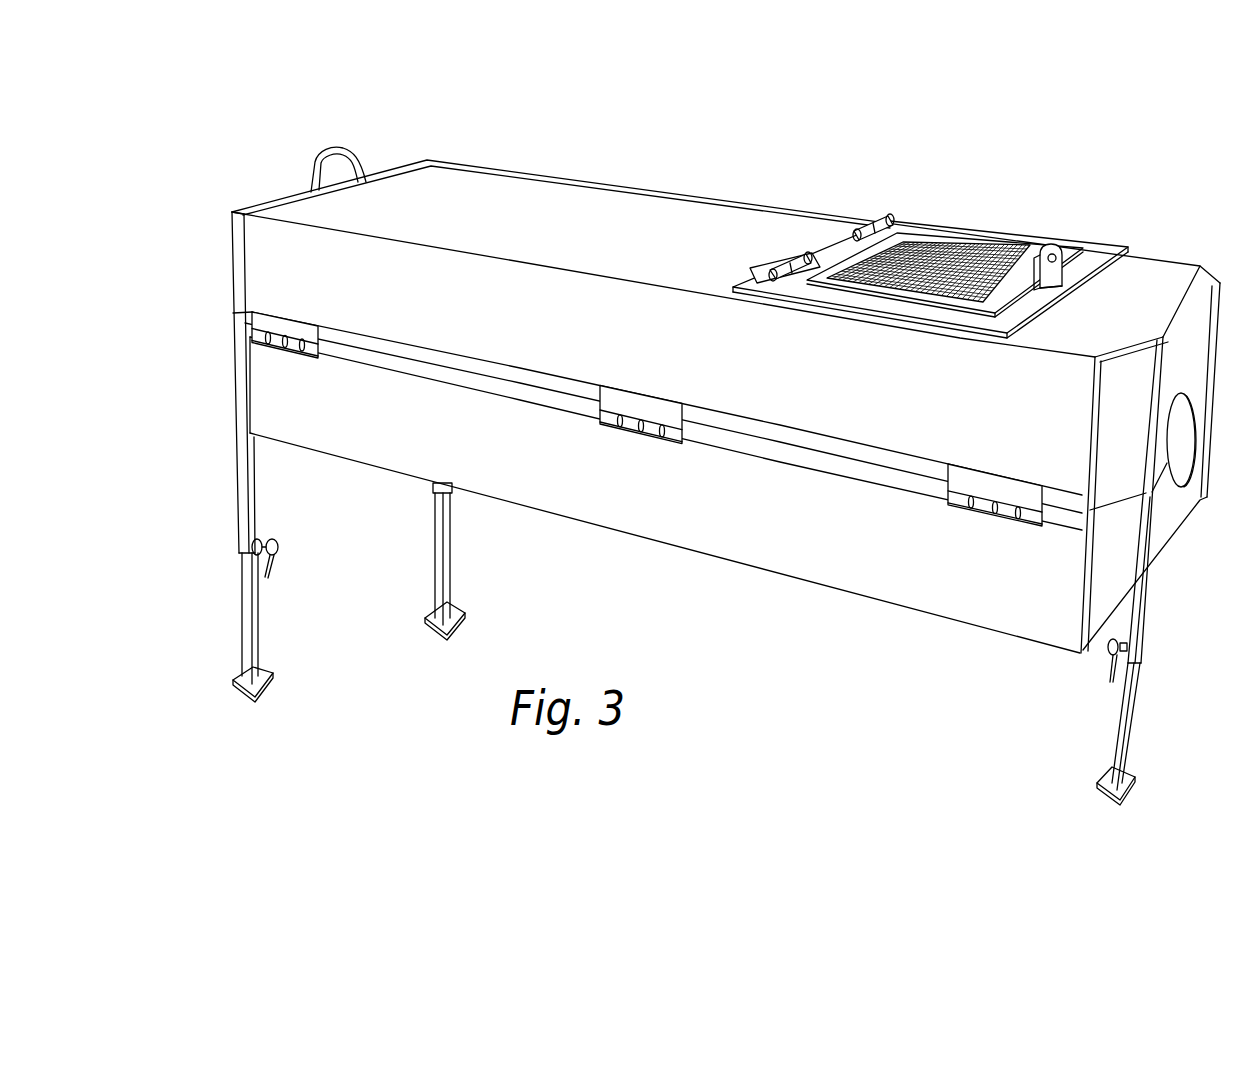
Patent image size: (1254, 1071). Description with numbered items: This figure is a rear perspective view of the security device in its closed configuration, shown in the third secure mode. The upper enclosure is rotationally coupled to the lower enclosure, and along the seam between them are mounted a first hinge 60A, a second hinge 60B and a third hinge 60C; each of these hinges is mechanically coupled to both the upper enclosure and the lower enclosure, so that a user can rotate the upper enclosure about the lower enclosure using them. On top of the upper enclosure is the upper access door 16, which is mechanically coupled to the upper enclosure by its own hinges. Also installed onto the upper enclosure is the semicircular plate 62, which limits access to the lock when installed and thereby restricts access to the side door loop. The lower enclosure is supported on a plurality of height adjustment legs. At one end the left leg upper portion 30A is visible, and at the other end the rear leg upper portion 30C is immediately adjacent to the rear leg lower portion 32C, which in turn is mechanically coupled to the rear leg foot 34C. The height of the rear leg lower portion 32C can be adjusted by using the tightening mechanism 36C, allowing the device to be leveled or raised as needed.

The upper access door 16 is at (957, 258).
The semicircular plate 62 is at (338, 173).
The first hinge 60A is at (987, 505).
The second hinge 60B is at (632, 415).
The third hinge 60C is at (285, 327).
The left leg upper portion 30A is at (1155, 616).
The rear leg upper portion 30C is at (277, 569).
The rear leg lower portion 32C is at (248, 588).
The rear leg foot 34C is at (243, 667).
The tightening mechanism 36C is at (280, 550).